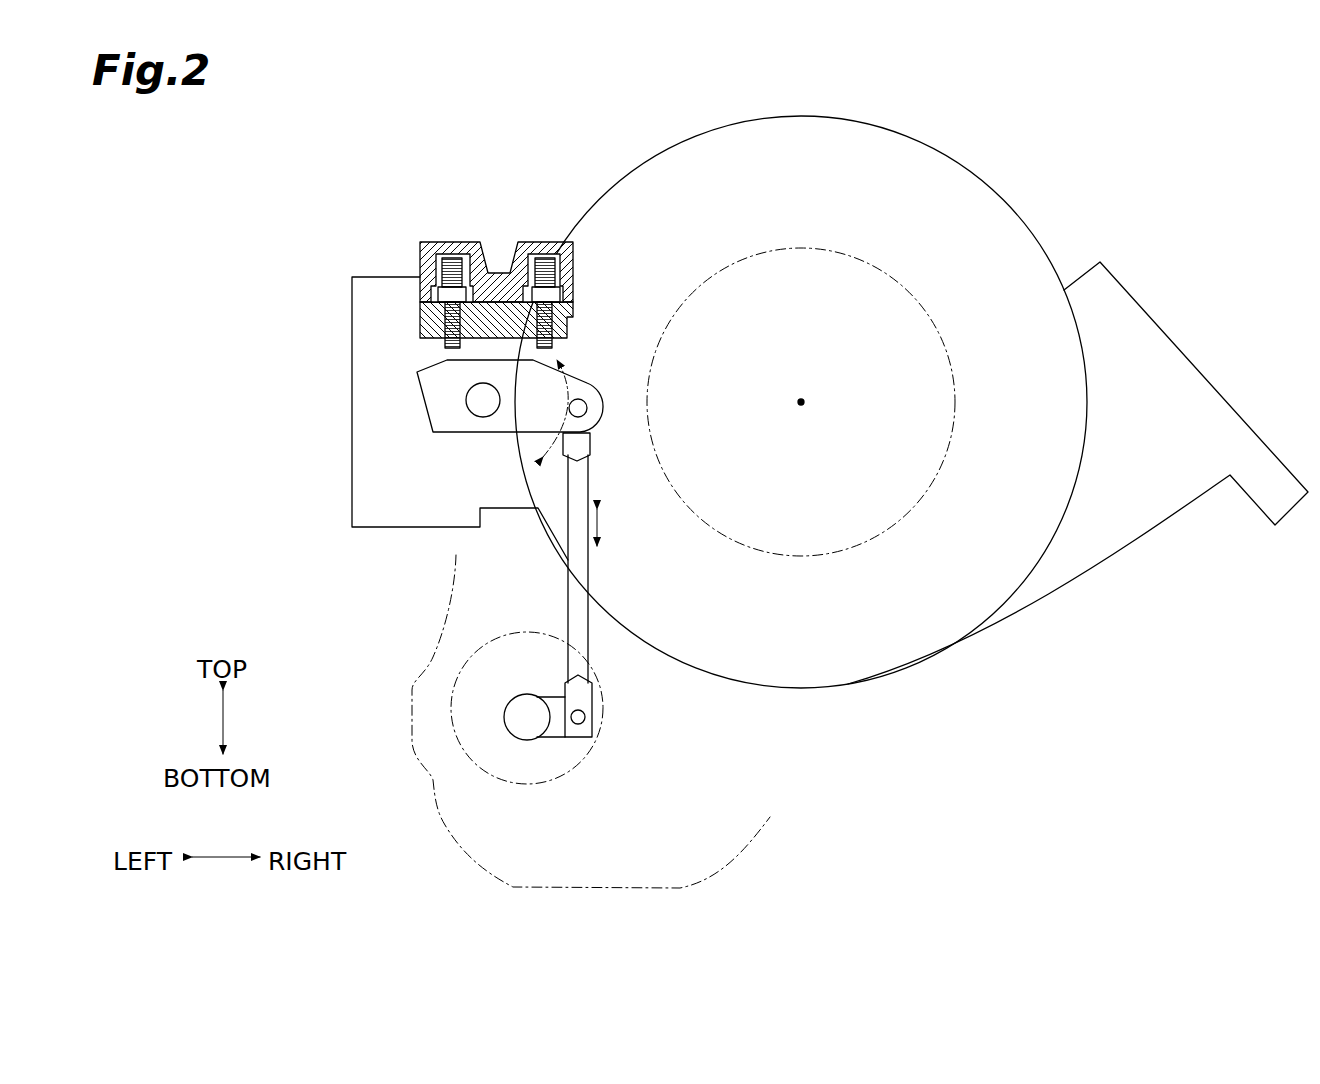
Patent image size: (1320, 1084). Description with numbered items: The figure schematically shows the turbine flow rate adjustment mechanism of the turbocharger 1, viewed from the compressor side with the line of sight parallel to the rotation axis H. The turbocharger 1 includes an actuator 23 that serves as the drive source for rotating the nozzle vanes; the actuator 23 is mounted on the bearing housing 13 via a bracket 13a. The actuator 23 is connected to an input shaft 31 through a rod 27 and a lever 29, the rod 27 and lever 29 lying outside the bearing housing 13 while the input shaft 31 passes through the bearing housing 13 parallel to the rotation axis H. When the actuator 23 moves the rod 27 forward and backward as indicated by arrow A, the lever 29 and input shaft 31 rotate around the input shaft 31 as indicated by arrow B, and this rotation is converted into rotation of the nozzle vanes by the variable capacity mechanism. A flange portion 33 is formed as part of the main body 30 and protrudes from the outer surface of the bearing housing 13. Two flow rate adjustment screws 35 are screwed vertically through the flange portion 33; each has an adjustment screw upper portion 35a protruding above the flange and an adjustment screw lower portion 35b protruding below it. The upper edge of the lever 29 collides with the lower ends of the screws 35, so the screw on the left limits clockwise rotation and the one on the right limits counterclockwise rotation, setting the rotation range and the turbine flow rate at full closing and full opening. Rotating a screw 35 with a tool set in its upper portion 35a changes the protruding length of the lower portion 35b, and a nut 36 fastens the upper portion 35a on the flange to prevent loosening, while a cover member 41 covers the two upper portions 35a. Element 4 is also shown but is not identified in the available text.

The turbocharger 1 is at (1110, 185).
The guide member 4 is at (1117, 540).
The bearing housing 13 is at (913, 177).
The bracket 13a is at (650, 837).
The actuator 23 is at (493, 770).
The rod 27 is at (568, 590).
The lever 29 is at (440, 413).
The main body 30 is at (808, 112).
The input shaft 31 is at (480, 405).
The flange portion 33 is at (420, 318).
The flow rate adjustment screw 35 is at (472, 269).
The adjustment screw upper portion 35a is at (440, 240).
The adjustment screw lower portion 35b is at (443, 347).
The nut 36 is at (570, 293).
The cover member 41 is at (420, 257).
The arrow A is at (603, 522).
The arrow B is at (593, 427).
The rotation axis H is at (803, 400).